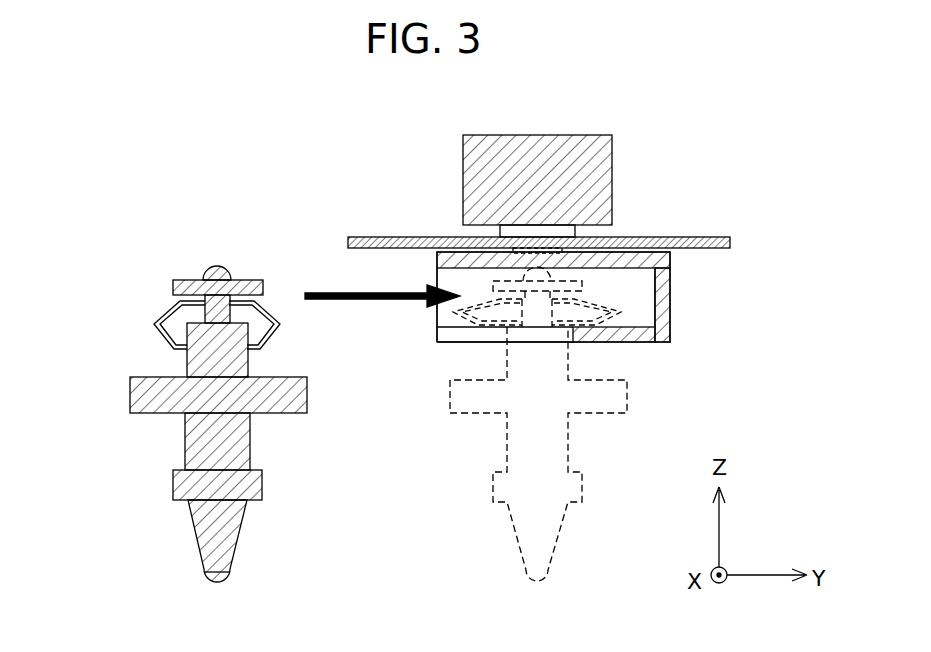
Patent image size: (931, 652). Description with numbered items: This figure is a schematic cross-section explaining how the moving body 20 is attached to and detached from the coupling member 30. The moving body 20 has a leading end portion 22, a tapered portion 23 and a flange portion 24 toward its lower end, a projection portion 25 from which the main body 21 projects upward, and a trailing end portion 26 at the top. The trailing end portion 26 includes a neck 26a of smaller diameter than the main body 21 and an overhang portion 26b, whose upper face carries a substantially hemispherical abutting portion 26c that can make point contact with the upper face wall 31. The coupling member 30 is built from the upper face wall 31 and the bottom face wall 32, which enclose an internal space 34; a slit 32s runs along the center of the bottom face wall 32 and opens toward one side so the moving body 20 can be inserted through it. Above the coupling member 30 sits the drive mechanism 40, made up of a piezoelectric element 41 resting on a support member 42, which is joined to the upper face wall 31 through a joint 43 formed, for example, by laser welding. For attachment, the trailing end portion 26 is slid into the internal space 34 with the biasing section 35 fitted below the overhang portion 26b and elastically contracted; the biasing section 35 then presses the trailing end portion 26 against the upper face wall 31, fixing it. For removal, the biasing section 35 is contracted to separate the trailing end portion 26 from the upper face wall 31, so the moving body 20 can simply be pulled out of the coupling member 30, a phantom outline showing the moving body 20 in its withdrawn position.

The moving body 20 is at (354, 401).
The main body 21 is at (187, 443).
The leading end portion 22 is at (217, 582).
The tapered portion 23 is at (205, 527).
The flange portion 24 is at (173, 487).
The projection portion 25 is at (130, 390).
The trailing end portion 26 is at (154, 256).
The neck 26a is at (151, 297).
The overhang portion 26b is at (187, 280).
The abutting portion 26c is at (216, 267).
The coupling member 30 is at (594, 318).
The upper face wall 31 is at (633, 266).
The bottom face wall 32 is at (622, 342).
The slit 32s is at (448, 338).
The internal space 34 is at (628, 297).
The biasing section 35 is at (163, 338).
The drive mechanism 40 is at (546, 190).
The piezoelectric element 41 is at (600, 176).
The support member 42 is at (539, 217).
The joint 43 is at (530, 252).